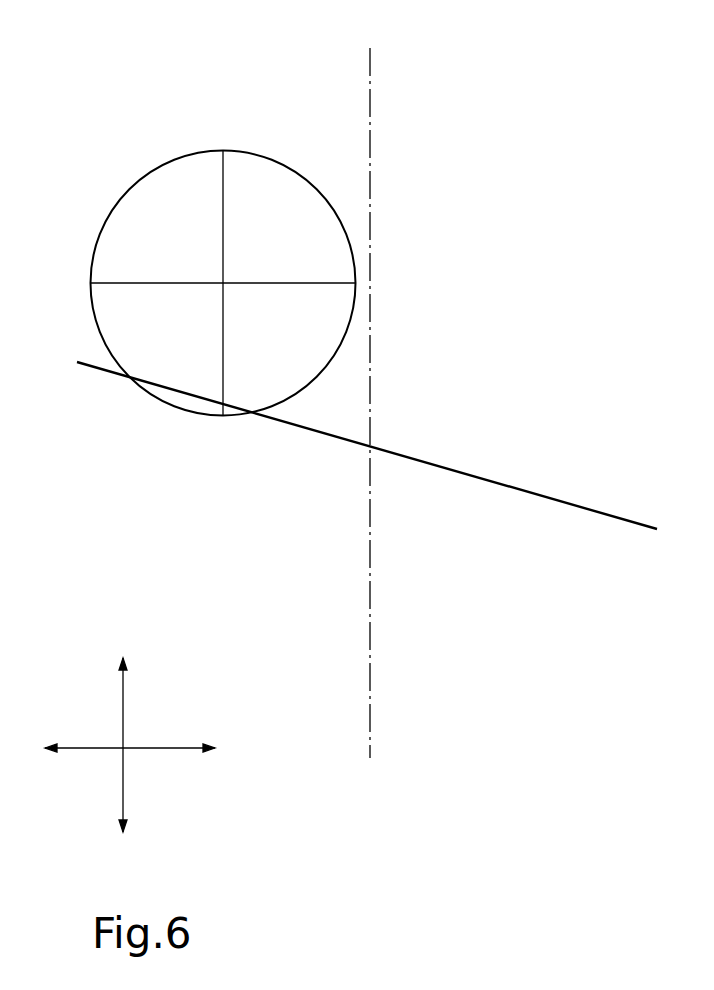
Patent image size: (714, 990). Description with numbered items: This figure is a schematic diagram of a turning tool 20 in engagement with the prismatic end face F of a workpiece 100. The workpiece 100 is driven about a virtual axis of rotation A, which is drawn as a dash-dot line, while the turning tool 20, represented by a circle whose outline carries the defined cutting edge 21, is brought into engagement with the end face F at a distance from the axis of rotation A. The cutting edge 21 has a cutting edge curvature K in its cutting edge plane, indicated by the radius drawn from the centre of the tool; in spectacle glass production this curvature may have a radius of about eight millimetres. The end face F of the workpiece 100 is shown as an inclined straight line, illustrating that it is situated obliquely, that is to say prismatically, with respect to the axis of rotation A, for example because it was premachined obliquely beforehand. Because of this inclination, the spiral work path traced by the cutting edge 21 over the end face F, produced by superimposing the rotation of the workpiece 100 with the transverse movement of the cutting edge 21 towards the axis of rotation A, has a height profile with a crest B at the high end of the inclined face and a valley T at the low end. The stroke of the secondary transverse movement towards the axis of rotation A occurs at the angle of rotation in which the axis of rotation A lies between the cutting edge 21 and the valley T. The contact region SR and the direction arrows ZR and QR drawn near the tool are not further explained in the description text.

The turning tool 20 is at (173, 158).
The cutting edge 21 is at (167, 400).
The workpiece 100 is at (583, 505).
The virtual axis of rotation A is at (383, 395).
The crest B is at (77, 390).
The valley T is at (650, 547).
The cutting edge curvature K is at (317, 372).
The end face F is at (492, 481).
The contact point SR is at (203, 412).
The ZR axis direction ZR is at (143, 745).
The QR axis direction QR is at (138, 765).